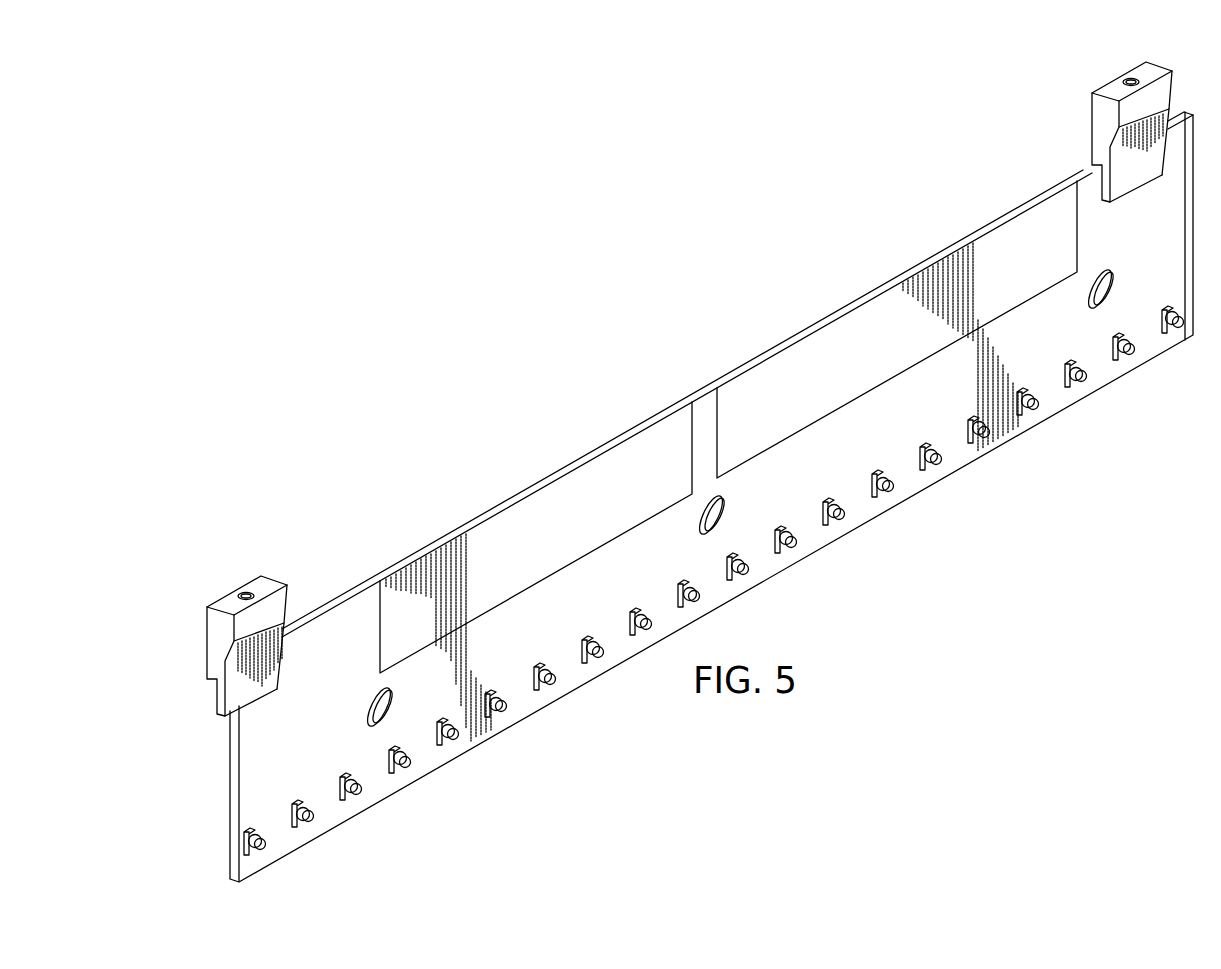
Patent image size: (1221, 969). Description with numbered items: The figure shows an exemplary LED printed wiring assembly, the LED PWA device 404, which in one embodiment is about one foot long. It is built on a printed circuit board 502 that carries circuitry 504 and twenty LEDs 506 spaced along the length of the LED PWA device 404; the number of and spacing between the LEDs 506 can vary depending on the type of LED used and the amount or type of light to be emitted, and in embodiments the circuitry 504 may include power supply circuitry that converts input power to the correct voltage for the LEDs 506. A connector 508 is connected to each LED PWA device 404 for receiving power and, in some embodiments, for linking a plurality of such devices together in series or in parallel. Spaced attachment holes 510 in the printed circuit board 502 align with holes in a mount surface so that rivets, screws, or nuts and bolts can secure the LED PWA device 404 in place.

The LED PWA device 404 is at (473, 421).
The printed circuit board 502 is at (260, 742).
The circuitry 504 is at (860, 338).
The LEDs 506 is at (1086, 374).
The connector 508 is at (1118, 87).
The attachment holes 510 is at (723, 506).